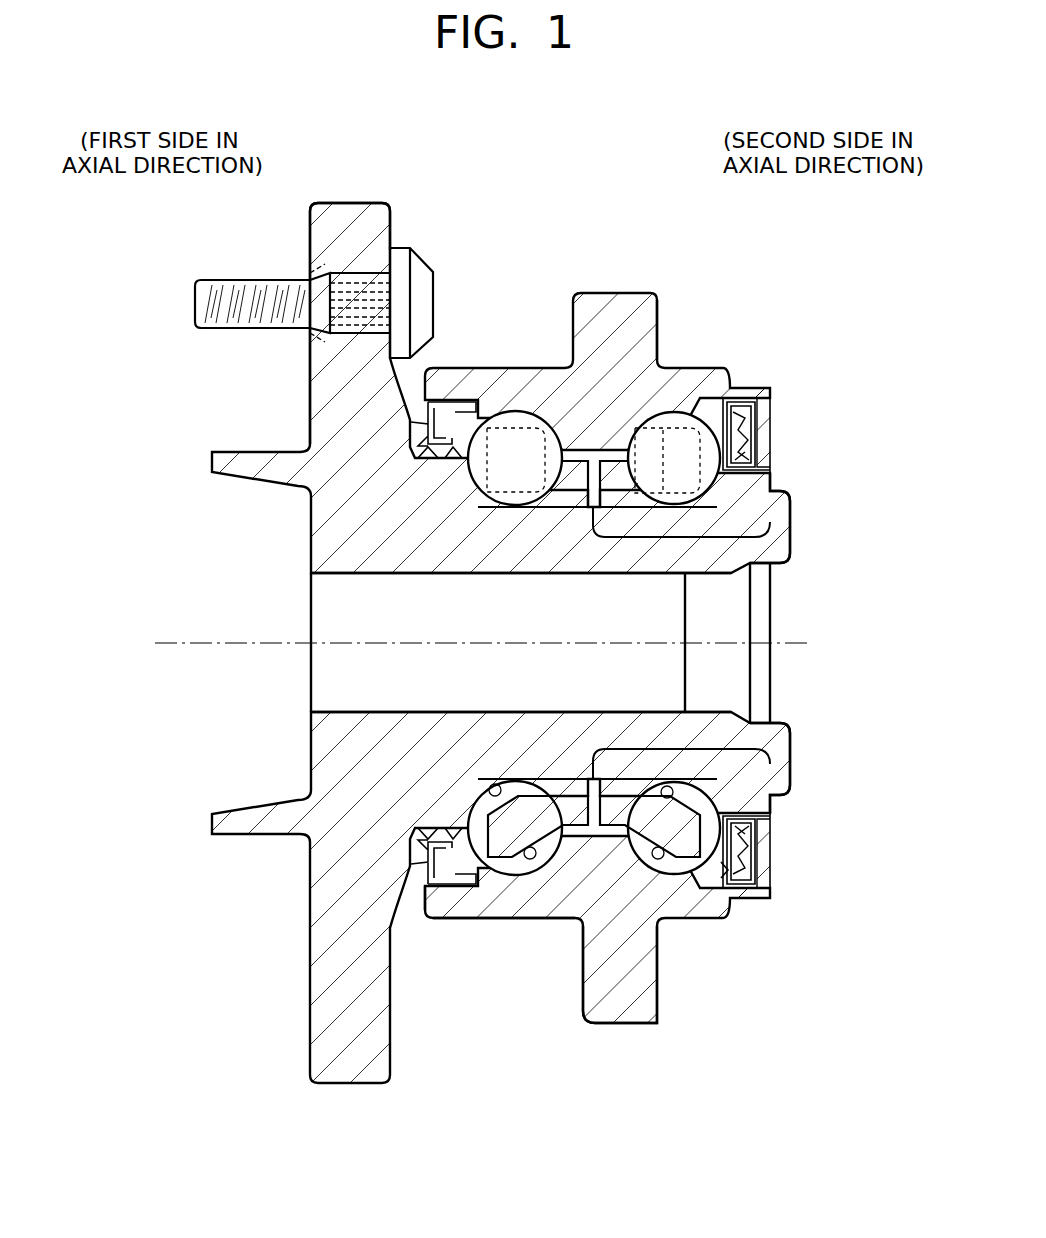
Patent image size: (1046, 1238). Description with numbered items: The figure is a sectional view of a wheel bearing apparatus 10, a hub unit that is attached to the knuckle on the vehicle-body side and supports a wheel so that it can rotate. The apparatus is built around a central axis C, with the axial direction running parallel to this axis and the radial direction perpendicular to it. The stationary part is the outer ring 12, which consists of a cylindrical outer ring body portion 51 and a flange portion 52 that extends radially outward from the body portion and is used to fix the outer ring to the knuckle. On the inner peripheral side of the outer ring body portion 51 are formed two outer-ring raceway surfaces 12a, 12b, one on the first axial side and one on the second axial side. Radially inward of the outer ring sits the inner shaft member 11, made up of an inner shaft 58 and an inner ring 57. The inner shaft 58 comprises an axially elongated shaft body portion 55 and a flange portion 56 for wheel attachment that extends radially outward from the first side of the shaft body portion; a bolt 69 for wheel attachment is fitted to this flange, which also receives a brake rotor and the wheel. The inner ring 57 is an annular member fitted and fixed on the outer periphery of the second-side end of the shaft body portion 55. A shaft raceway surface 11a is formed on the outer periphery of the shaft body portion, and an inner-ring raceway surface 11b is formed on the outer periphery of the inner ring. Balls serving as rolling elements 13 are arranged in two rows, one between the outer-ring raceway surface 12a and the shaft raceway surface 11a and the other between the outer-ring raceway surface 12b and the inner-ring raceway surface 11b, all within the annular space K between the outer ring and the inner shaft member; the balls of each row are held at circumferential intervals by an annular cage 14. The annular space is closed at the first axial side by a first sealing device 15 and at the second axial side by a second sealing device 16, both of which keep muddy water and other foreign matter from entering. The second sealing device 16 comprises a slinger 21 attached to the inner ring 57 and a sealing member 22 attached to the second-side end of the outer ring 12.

The wheel bearing apparatus 10 is at (690, 370).
The inner shaft member 11 is at (312, 527).
The shaft raceway surface 11a is at (496, 786).
The inner-ring raceway surface 11b is at (664, 788).
The outer ring 12 is at (727, 371).
The outer-ring raceway surface 12a is at (530, 858).
The outer-ring raceway surface 12b is at (656, 860).
The rolling elements 13 is at (522, 435).
The cage 14 is at (535, 455).
The first sealing device 15 is at (443, 403).
The second sealing device 16 is at (774, 866).
The slinger 21 is at (771, 441).
The sealing member 22 is at (752, 394).
The outer ring body portion 51 is at (565, 898).
The flange portion 52 is at (622, 1024).
The shaft body portion 55 is at (566, 546).
The flange portion 56 is at (330, 234).
The inner ring 57 is at (752, 798).
The inner shaft 58 is at (452, 574).
The bolt 69 is at (204, 330).
The central axis C is at (795, 645).
The annular space K is at (718, 872).